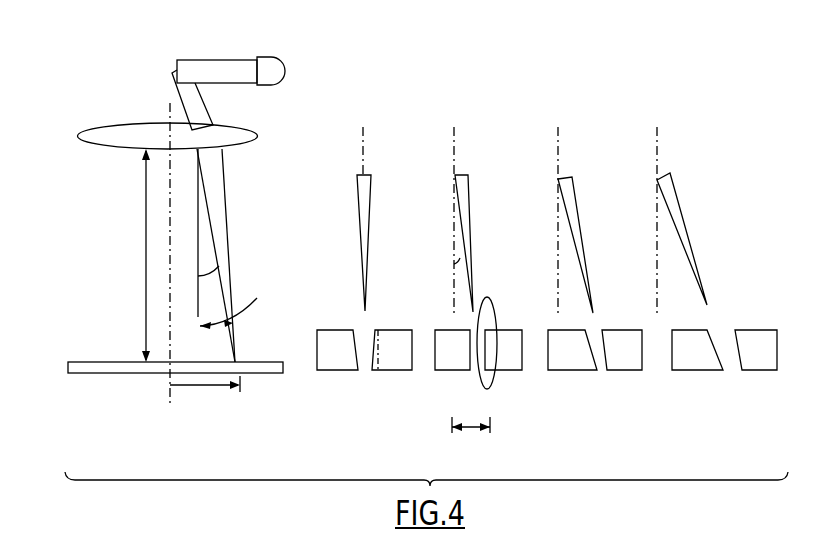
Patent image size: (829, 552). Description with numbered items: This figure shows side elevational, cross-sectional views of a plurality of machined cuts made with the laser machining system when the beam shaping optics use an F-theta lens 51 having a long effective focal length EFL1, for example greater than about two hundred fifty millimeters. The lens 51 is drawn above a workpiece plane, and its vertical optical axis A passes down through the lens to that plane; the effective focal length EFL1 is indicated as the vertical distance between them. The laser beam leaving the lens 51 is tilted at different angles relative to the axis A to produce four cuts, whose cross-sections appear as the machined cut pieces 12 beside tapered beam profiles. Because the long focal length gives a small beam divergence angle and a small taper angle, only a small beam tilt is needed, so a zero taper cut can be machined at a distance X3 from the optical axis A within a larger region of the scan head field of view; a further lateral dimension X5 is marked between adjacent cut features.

The F-theta lens 51 is at (113, 127).
The vertical optical axis A is at (170, 103).
The light source elements 12 is at (332, 370).
The effective focal length EFL1 is at (123, 255).
The distance from the optical axis X3 is at (220, 387).
The element spacing distance X5 is at (471, 440).